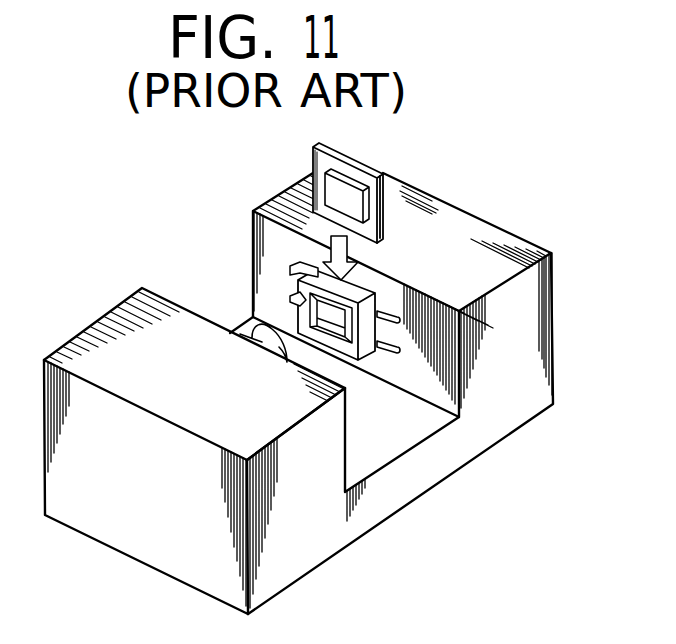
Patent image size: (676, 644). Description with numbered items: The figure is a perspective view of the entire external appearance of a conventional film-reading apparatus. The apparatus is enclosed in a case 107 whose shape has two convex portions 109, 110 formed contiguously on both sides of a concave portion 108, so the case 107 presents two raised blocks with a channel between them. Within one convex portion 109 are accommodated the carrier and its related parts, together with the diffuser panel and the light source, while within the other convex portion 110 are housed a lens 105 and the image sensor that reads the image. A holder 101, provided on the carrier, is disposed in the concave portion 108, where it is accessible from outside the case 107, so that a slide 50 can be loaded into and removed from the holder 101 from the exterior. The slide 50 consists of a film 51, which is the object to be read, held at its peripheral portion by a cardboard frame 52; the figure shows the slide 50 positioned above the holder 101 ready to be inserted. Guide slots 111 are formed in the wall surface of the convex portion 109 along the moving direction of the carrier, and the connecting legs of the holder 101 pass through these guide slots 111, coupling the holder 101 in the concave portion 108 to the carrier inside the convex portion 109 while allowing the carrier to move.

The slide 50 is at (350, 183).
The film 51 is at (347, 198).
The cardboard frame 52 is at (383, 190).
The holder 101 is at (350, 358).
The lens 105 is at (250, 315).
The case 107 is at (327, 515).
The concave portion 108 is at (385, 445).
The convex portion 109 is at (487, 240).
The convex portion 110 is at (92, 338).
The guide slots 111 is at (395, 350).